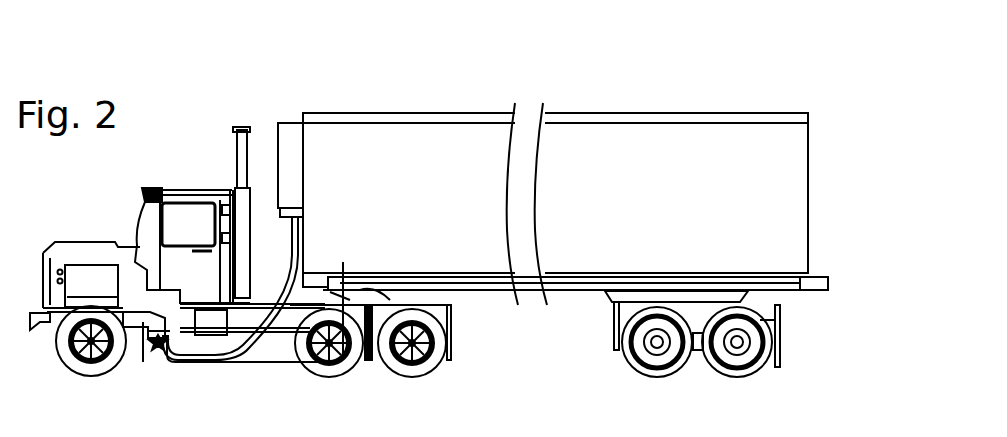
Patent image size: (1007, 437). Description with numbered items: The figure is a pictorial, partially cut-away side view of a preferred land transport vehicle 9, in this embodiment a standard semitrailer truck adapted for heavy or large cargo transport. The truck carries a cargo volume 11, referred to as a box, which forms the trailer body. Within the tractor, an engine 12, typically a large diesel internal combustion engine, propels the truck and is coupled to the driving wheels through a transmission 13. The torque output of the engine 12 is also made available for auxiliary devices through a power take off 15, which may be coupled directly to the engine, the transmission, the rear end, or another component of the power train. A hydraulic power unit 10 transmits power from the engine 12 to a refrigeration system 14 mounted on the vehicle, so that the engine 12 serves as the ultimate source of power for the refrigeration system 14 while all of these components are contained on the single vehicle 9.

The land transport vehicle 9 is at (717, 66).
The hydraulic power unit 10 is at (305, 206).
The cargo volume 11 is at (647, 137).
The engine 12 is at (97, 273).
The transmission 13 is at (148, 317).
The refrigeration system 14 is at (293, 130).
The power take off 15 is at (160, 348).